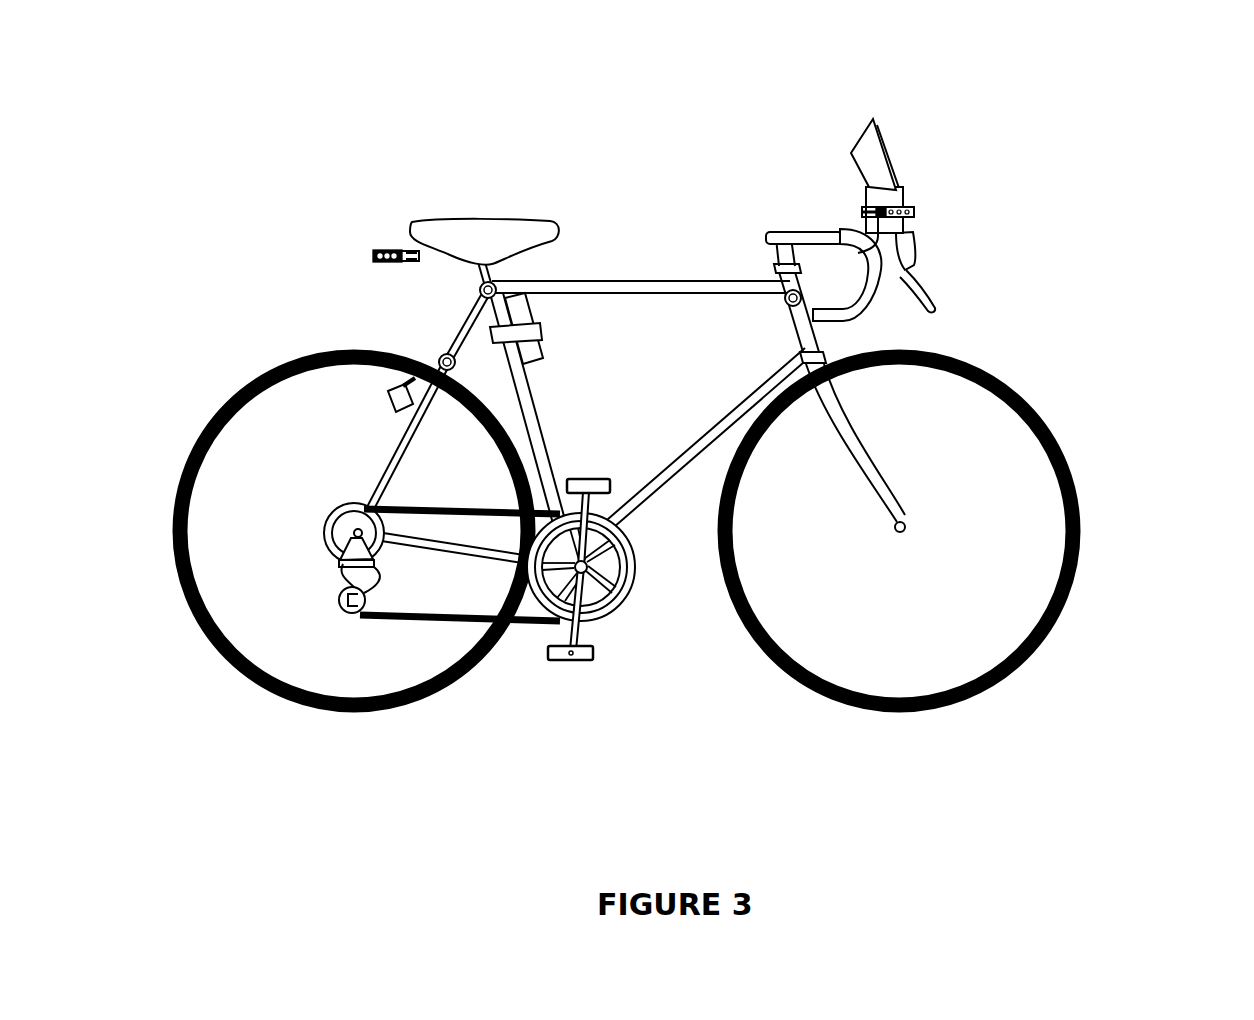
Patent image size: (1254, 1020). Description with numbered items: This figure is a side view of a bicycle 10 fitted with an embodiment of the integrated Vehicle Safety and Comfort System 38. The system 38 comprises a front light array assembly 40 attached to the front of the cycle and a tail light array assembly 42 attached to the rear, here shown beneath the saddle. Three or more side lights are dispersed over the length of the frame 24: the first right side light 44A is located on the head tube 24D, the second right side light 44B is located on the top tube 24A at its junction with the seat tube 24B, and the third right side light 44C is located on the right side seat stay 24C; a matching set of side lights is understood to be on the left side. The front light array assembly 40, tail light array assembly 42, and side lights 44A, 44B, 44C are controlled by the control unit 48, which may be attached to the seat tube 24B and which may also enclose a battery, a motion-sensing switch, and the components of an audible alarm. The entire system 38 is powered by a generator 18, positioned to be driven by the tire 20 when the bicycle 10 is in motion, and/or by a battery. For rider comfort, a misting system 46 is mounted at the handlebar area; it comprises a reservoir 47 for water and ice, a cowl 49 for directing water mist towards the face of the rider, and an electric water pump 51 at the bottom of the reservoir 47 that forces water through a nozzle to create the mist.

The bicycle 10 is at (1100, 293).
The generator 18 is at (400, 396).
The tire 20 is at (293, 700).
The frame 24 is at (673, 472).
The top tube 24A is at (684, 283).
The seat tube 24B is at (543, 427).
The seat stay 24C is at (380, 472).
The head tube 24D is at (815, 333).
The integrated Vehicle Safety and Comfort System 38 is at (1120, 136).
The front light array assembly 40 is at (937, 213).
The tail light array assembly 42 is at (382, 227).
The first right side light 44A is at (785, 292).
The second right side light 44B is at (490, 285).
The third right side light 44C is at (440, 357).
The misting system 46 is at (935, 142).
The reservoir 47 is at (863, 195).
The control unit 48 is at (542, 343).
The cowl 49 is at (850, 160).
The electric water pump 51 is at (842, 110).